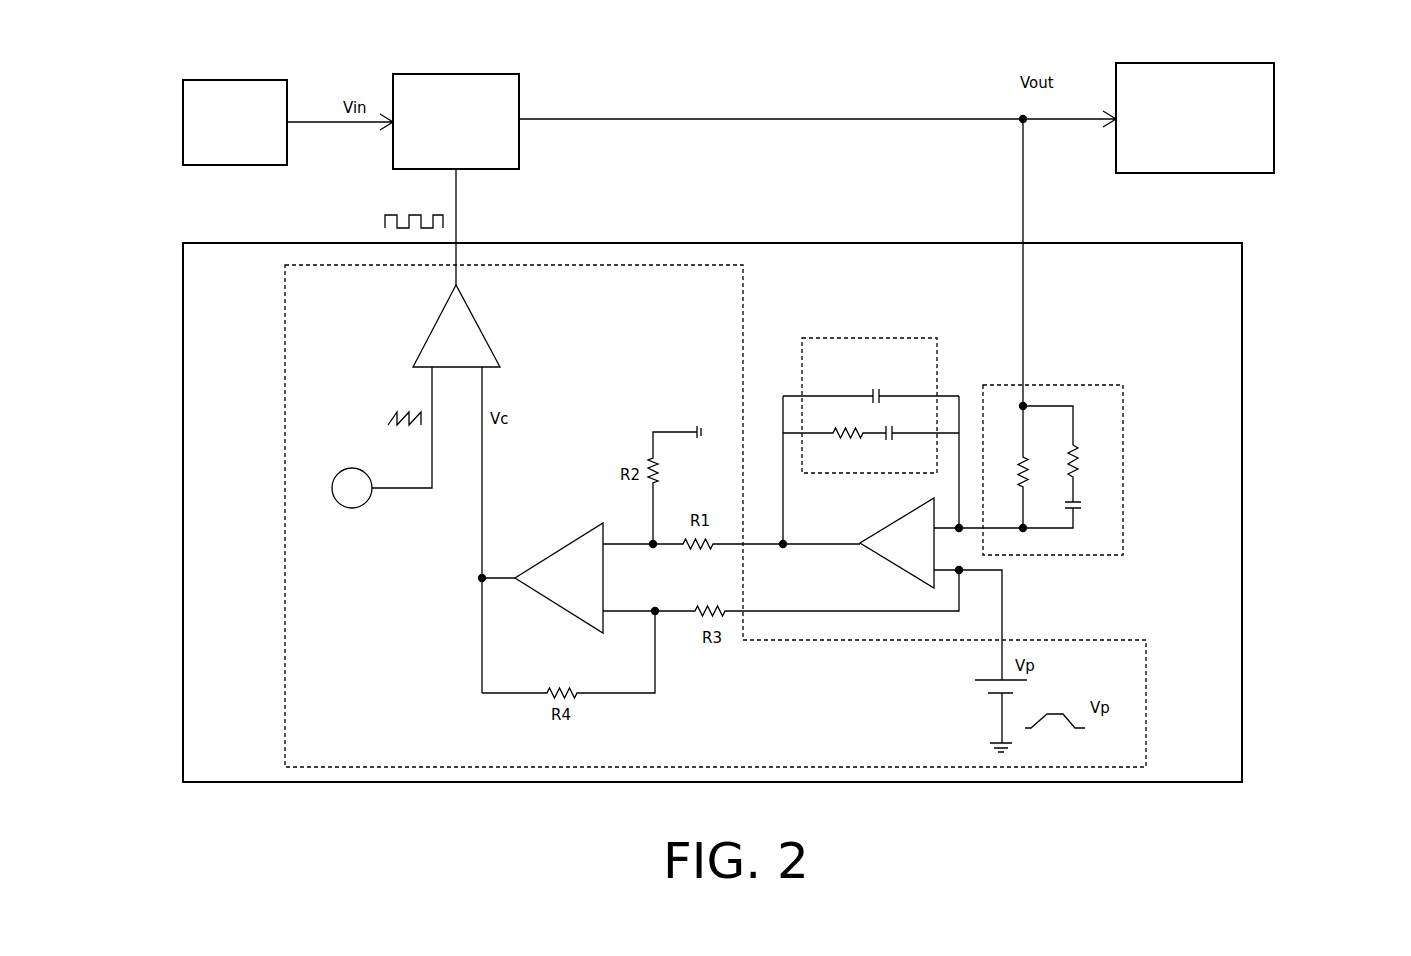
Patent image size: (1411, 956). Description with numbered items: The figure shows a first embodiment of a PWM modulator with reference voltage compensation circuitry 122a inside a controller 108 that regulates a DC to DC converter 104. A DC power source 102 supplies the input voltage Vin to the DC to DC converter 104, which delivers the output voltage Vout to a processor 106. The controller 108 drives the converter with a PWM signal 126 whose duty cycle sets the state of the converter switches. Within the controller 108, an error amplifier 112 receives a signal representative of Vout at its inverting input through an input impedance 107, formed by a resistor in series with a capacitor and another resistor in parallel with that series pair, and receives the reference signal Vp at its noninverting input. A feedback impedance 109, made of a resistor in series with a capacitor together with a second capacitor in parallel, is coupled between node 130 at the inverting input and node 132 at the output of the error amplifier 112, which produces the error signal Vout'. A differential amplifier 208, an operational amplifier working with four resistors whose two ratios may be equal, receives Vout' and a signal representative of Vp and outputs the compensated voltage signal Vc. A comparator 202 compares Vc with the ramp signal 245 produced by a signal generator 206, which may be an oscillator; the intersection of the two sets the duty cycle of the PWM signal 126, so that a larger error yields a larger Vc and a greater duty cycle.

The DC power source 102 is at (232, 80).
The DC to DC converter 104 is at (413, 74).
The processor 106 is at (1160, 63).
The controller 108 is at (1242, 497).
The PWM modulator with reference voltage compensation circuitry 122a is at (285, 440).
The PWM signal 126 is at (382, 226).
The comparator 202 is at (425, 338).
The ramp signal 245 is at (418, 426).
The signal generator 206 is at (352, 508).
The differential amplifier 208 is at (537, 563).
The node 130 is at (783, 547).
The feedback impedance 109 is at (848, 338).
The error amplifier 112 is at (872, 558).
The node 132 is at (959, 531).
The input impedance 107 is at (1083, 385).